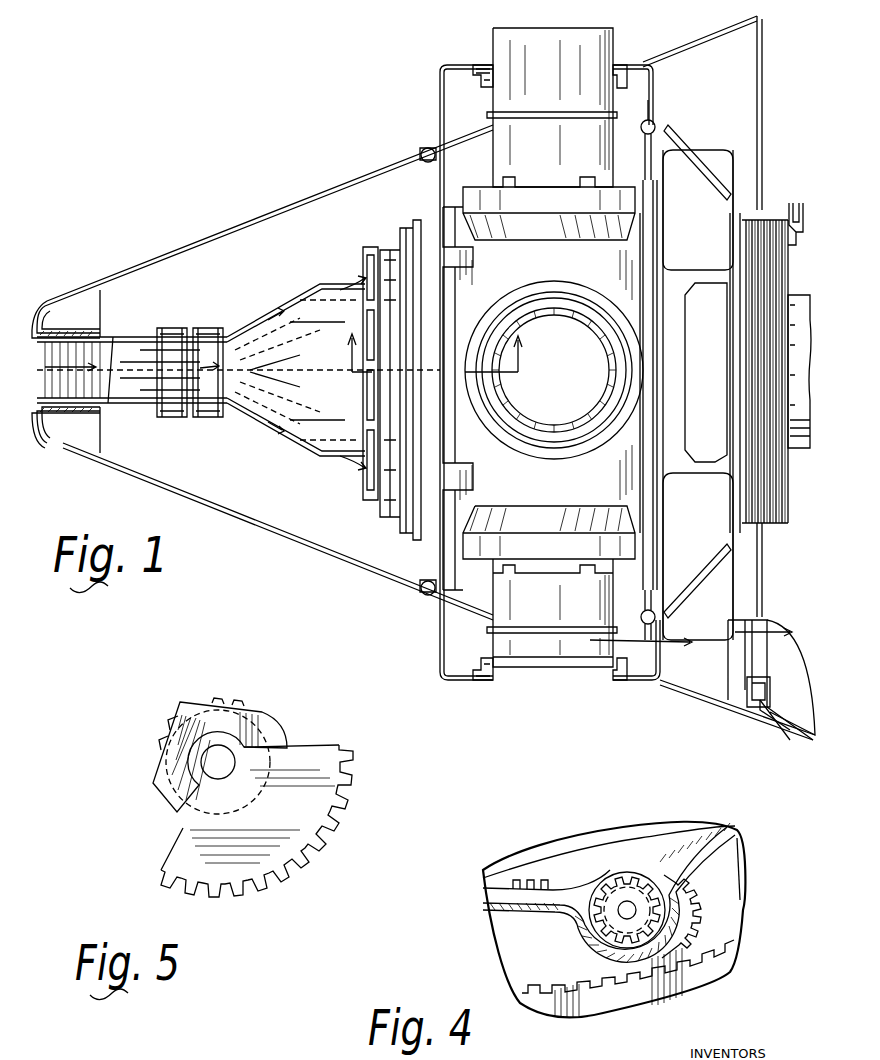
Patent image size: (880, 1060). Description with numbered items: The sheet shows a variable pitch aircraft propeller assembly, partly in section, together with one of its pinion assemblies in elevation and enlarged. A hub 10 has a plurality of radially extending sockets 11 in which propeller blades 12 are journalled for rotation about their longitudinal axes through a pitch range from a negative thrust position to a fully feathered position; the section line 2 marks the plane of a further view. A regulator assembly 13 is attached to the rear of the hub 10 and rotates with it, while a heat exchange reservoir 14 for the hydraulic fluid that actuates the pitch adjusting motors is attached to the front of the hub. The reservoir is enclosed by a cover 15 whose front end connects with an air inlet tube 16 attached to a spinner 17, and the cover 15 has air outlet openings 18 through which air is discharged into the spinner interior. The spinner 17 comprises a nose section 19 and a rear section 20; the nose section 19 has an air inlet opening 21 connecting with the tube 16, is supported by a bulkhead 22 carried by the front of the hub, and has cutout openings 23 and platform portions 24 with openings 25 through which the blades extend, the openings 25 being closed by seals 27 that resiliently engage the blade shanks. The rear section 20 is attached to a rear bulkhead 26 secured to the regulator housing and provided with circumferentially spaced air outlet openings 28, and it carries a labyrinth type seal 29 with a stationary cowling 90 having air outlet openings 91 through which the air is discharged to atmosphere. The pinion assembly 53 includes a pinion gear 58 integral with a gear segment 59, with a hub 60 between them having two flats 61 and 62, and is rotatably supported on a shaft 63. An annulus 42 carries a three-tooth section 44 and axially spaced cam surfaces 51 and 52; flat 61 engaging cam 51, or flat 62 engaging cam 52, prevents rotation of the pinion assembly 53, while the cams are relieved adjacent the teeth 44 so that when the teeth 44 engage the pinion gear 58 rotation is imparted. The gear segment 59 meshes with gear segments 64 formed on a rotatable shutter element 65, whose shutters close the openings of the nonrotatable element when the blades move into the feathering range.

In FIG. 1, the section line 2- 2 is at (431, 363).
In FIG. 1, the hub 10 is at (440, 522).
In FIG. 1, the radially extending sockets 11 is at (470, 200).
In FIG. 1, the propeller blades 12 is at (615, 53).
In FIG. 1, the regulator assembly 13 is at (705, 157).
In FIG. 1, the heat exchange reservoir 14 is at (312, 282).
In FIG. 1, the cover 15 is at (265, 332).
In FIG. 1, the air inlet tube 16 is at (145, 342).
In FIG. 1, the spinner 17 is at (238, 215).
In FIG. 1, the air outlet openings 18 is at (372, 250).
In FIG. 1, the nose section 19 is at (135, 290).
In FIG. 1, the rear section 20 is at (700, 690).
In FIG. 1, the air inlet opening 21 is at (47, 432).
In FIG. 1, the bulkhead 22 is at (420, 572).
In FIG. 1, the cutout openings 23 is at (440, 136).
In FIG. 1, the platform portions 24 is at (438, 112).
In FIG. 1, the openings 25 is at (495, 60).
In FIG. 1, the rear bulkhead 26 is at (660, 100).
In FIG. 1, the seals 27 is at (612, 72).
In FIG. 1, the openings 28 is at (625, 127).
In FIG. 1, the labyrinth type seal 29 is at (758, 707).
In FIG. 4, the annulus 42 is at (500, 865).
In FIG. 4, the toothed section 44 is at (530, 878).
In FIG. 4, the cam surface 51 is at (678, 842).
In FIG. 4, the cam surface 52 is at (483, 890).
In FIG. 5, the pinion assembly 53 is at (175, 812).
In FIG. 4, the pinion assembly 53 is at (662, 905).
In FIG. 5, the pinion gear 58 is at (220, 700).
In FIG. 4, the pinion gear 58 is at (630, 878).
In FIG. 5, the gear segment 59 is at (300, 880).
In FIG. 4, the gear segment 59 is at (702, 912).
In FIG. 5, the hub 60 is at (162, 774).
In FIG. 4, the hub 60 is at (600, 890).
In FIG. 5, the flat 61 is at (178, 714).
In FIG. 4, the flat 61 is at (640, 875).
In FIG. 5, the flat 62 is at (260, 714).
In FIG. 4, the flat 62 is at (600, 925).
In FIG. 4, the shaft 63 is at (624, 917).
In FIG. 4, the gear segments 64 is at (735, 957).
In FIG. 4, the rotatable shutter element 65 is at (700, 987).
In FIG. 1, the stationary cowling 90 is at (808, 736).
In FIG. 1, the air outlet openings 91 is at (785, 727).